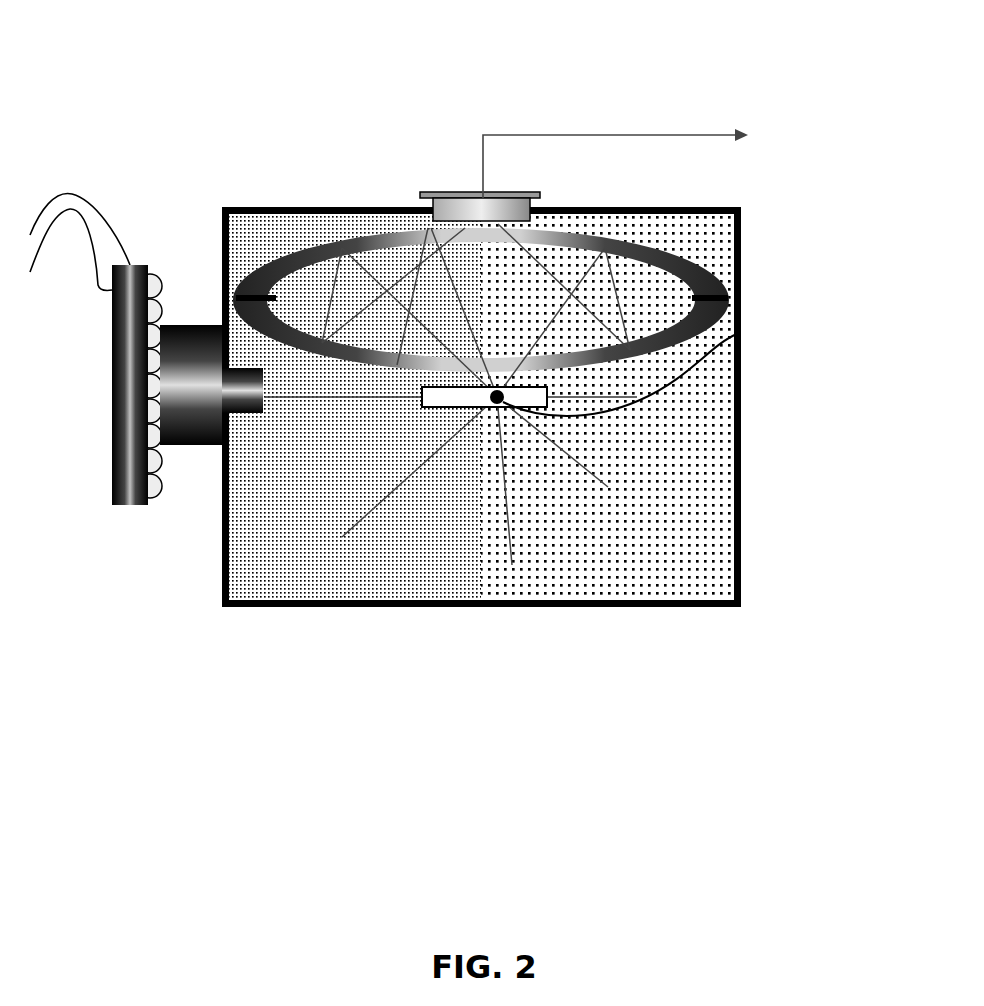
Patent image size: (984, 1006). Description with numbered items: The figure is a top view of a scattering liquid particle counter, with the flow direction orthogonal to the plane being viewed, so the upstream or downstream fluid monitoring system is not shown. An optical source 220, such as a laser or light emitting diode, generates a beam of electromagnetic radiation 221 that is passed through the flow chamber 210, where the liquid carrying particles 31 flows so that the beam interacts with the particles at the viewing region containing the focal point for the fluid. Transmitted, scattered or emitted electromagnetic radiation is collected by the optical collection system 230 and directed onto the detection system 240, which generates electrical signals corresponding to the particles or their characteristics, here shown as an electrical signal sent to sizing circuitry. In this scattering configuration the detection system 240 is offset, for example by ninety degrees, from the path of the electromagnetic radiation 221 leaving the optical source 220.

The flow chamber 210 is at (478, 420).
The optical source 220 is at (142, 525).
The beam of electromagnetic radiation 221 is at (307, 410).
The optical collection system 230 is at (445, 226).
The detection system 240 is at (456, 175).
The particles 31 is at (737, 334).